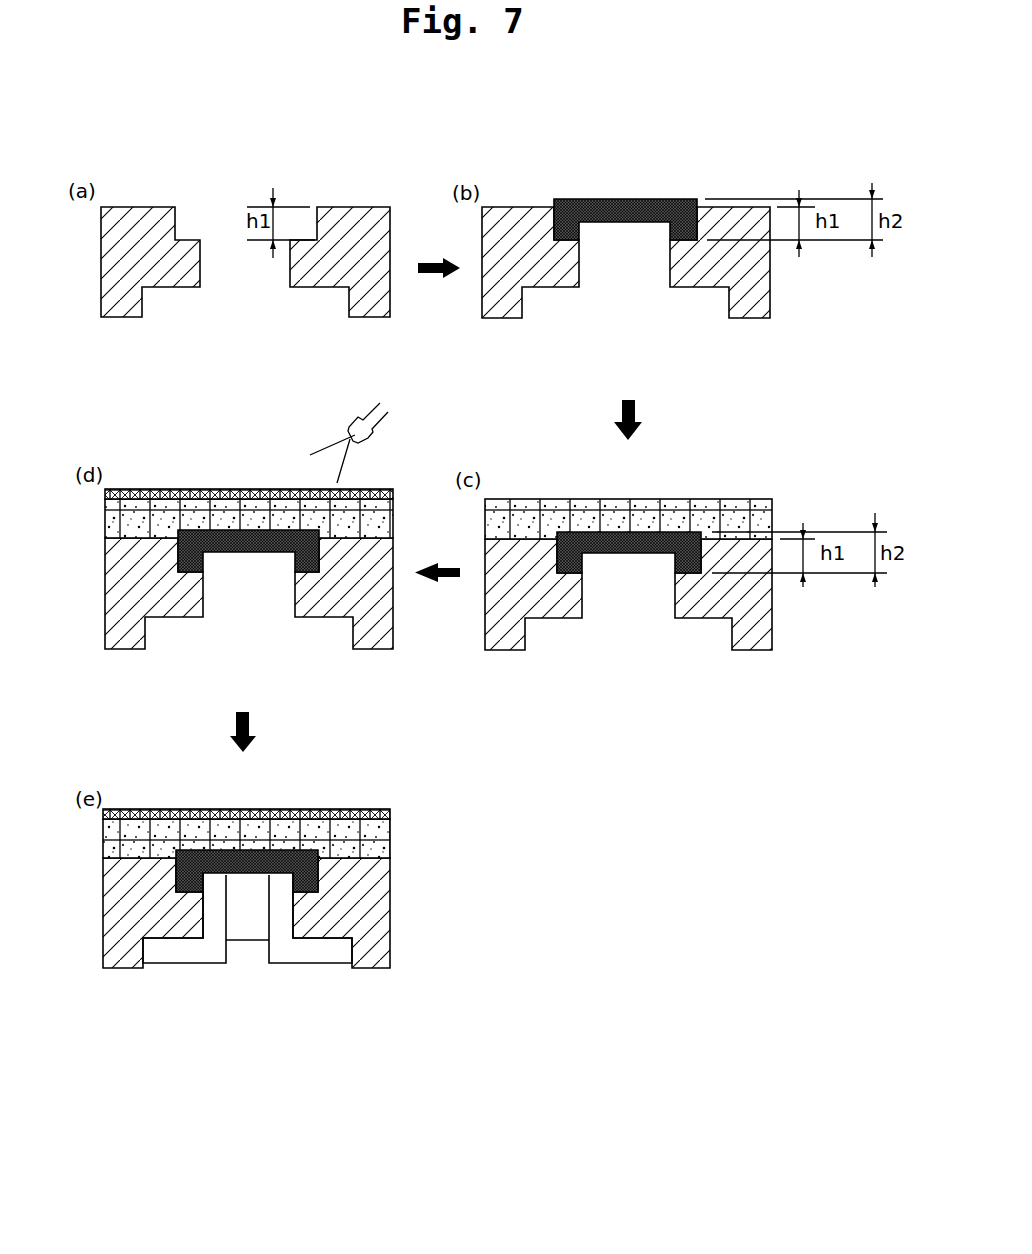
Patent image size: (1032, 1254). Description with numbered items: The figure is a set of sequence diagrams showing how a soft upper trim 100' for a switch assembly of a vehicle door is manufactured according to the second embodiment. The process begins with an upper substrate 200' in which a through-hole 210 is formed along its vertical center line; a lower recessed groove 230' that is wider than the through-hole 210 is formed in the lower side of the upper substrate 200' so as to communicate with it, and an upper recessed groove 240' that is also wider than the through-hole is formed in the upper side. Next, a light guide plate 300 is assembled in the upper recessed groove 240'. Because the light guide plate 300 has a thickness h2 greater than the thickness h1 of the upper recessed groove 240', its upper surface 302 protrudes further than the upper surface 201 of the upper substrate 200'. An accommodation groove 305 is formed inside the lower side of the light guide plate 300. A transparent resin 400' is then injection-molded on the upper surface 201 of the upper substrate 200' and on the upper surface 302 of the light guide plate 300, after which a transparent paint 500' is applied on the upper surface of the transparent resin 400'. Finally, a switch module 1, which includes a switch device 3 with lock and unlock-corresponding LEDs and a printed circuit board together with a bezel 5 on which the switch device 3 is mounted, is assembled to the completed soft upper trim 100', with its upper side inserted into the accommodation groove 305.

The upper substrate 200' is at (250, 539).
The upper recessed groove 240' is at (157, 232).
The lower recessed groove 230' is at (340, 288).
The through-hole 210 is at (220, 277).
The upper surface of the upper substrate 201 is at (526, 207).
The upper surface of the light guide plate 302 is at (607, 198).
The light guide plate 300 is at (438, 502).
The accommodation groove 305 is at (622, 228).
The transparent resin 400' is at (406, 636).
The transparent paint 500' is at (282, 631).
The soft upper trim for switch assembly of a vehicle door 100' is at (156, 441).
The switch module 1 is at (247, 971).
The switch device 3 is at (247, 928).
The bezel 5 is at (288, 948).